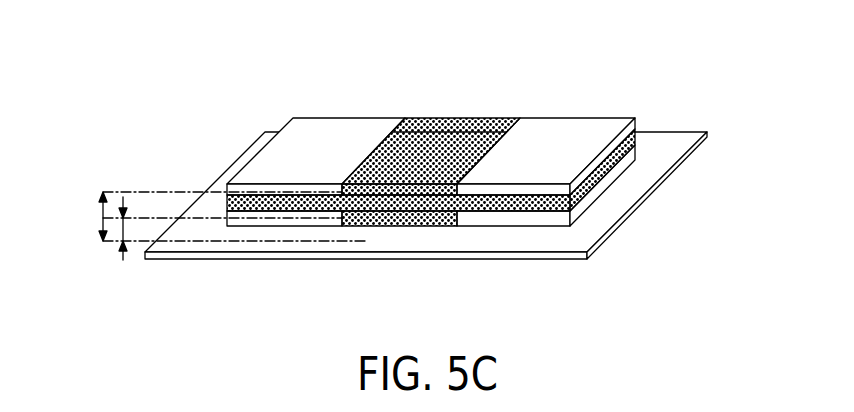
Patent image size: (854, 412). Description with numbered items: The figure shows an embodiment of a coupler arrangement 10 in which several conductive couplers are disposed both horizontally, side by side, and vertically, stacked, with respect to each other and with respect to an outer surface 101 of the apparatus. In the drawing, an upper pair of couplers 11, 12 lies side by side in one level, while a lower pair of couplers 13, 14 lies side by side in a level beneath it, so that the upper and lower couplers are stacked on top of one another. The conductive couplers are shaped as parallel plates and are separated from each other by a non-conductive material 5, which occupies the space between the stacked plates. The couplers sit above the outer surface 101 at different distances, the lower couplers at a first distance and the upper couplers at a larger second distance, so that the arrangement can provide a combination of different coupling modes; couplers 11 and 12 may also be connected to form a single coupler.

The coupler arrangement 10 is at (220, 94).
The outer surface 101 is at (213, 263).
The coupler 11 is at (312, 189).
The coupler 12 is at (545, 187).
The non-conductive material 5 is at (428, 187).
The coupler 13 is at (303, 225).
The coupler 14 is at (534, 225).